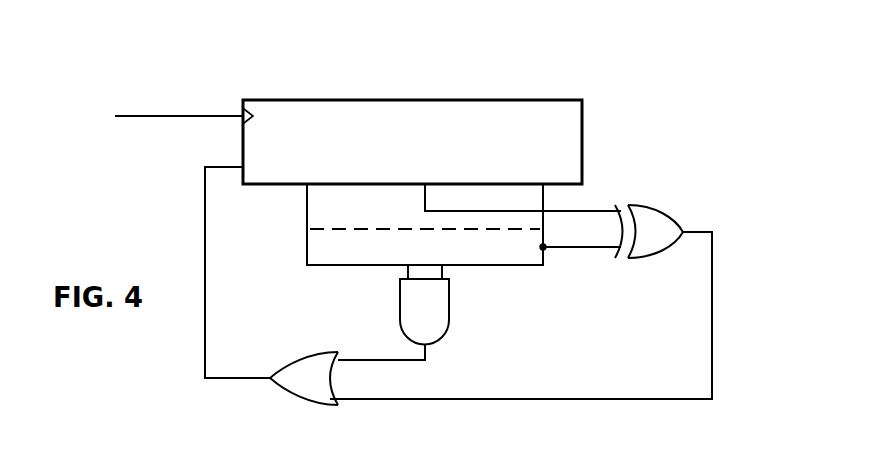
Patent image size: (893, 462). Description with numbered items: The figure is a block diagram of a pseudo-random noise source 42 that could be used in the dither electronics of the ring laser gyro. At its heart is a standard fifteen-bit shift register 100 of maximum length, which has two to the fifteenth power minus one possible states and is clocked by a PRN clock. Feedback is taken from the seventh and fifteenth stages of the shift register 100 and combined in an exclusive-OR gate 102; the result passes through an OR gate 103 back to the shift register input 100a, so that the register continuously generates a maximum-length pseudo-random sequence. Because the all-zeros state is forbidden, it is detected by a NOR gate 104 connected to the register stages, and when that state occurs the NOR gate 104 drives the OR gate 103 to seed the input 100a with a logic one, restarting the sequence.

The PRN code generator 42 is at (708, 125).
The shift register 100 is at (582, 140).
The shift register input 100a is at (243, 170).
The exclusive-OR gate 102 is at (638, 206).
The OR gate 103 is at (318, 352).
The NOR gate 104 is at (449, 298).